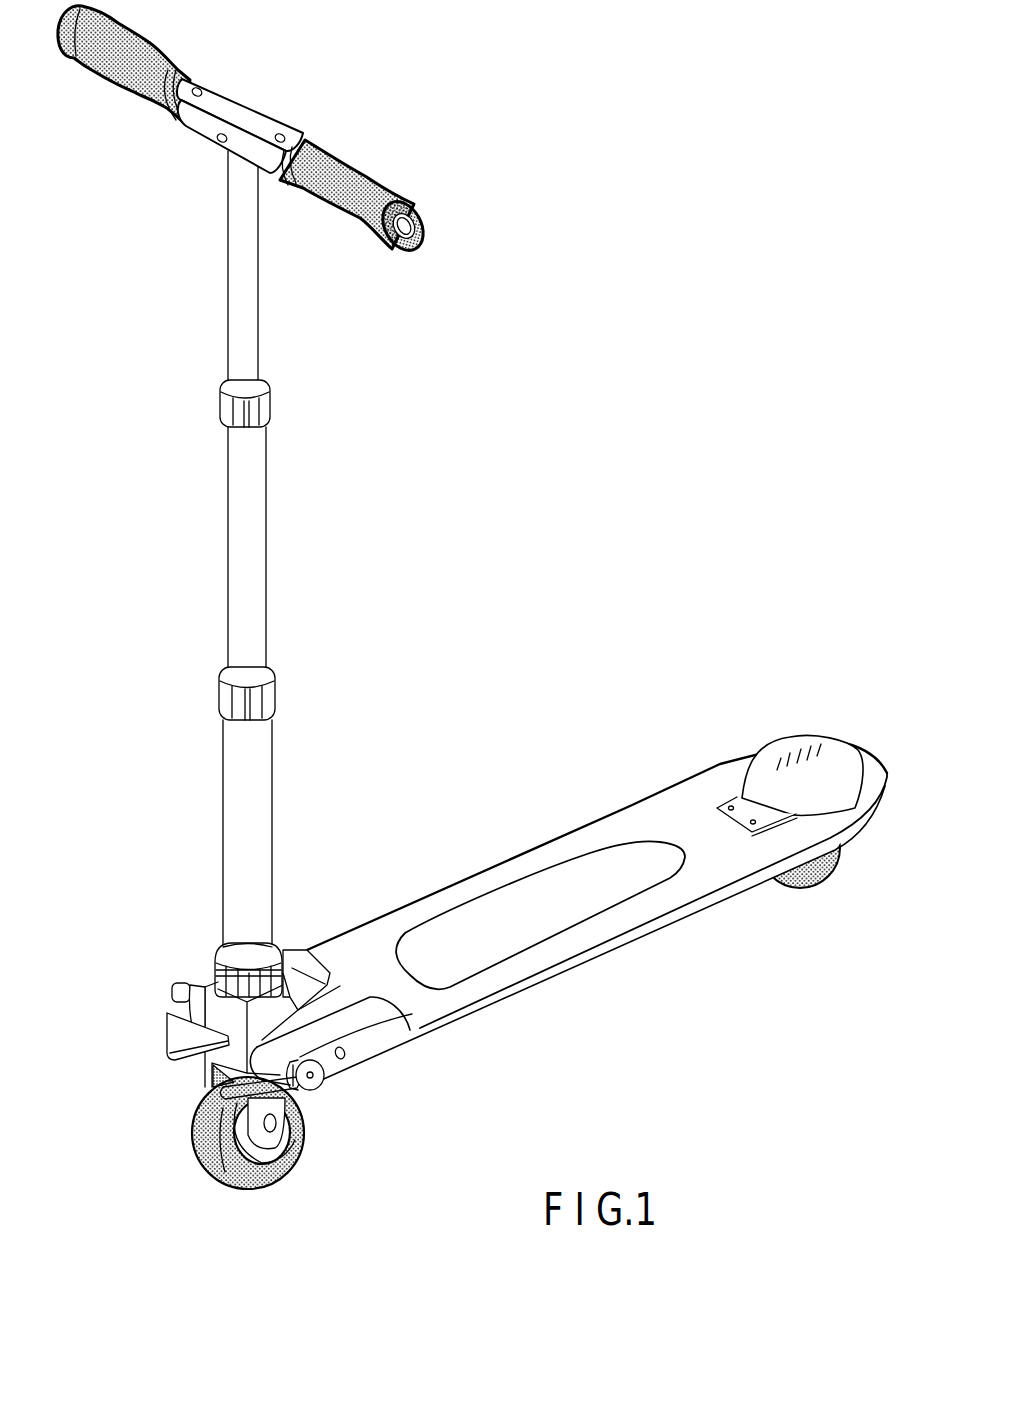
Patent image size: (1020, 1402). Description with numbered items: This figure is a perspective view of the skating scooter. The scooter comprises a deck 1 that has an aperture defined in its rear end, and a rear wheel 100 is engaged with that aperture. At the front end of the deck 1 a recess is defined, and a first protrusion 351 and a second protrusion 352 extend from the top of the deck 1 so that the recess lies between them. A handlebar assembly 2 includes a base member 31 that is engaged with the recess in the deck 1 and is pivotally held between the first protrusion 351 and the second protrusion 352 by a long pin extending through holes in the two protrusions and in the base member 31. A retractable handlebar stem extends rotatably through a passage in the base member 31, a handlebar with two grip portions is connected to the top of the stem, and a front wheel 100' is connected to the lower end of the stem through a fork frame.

The deck 1 is at (490, 980).
The handlebar assembly 2 is at (177, 517).
The base member 31 is at (178, 1020).
The first protrusion 351 is at (363, 1020).
The second protrusion 352 is at (297, 963).
The rear wheel 100 is at (813, 895).
The front wheel 100' is at (248, 1177).